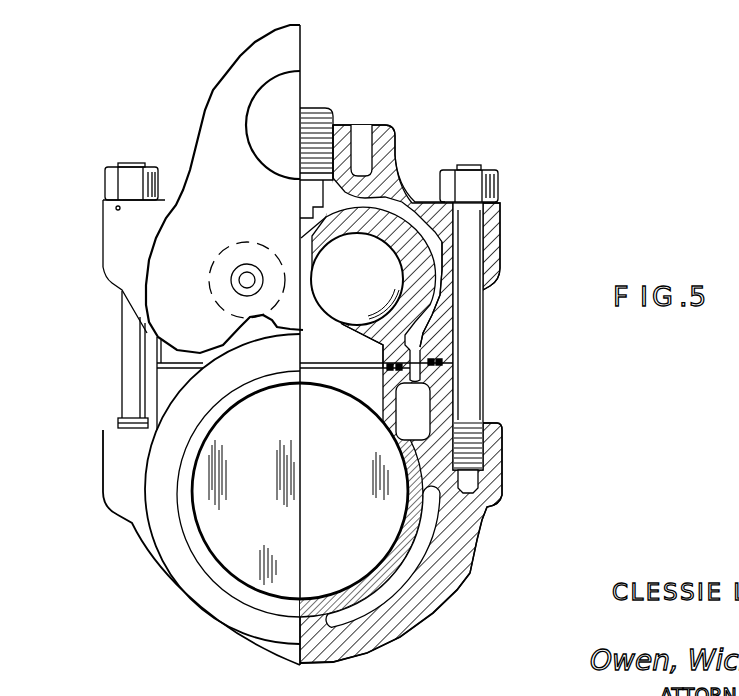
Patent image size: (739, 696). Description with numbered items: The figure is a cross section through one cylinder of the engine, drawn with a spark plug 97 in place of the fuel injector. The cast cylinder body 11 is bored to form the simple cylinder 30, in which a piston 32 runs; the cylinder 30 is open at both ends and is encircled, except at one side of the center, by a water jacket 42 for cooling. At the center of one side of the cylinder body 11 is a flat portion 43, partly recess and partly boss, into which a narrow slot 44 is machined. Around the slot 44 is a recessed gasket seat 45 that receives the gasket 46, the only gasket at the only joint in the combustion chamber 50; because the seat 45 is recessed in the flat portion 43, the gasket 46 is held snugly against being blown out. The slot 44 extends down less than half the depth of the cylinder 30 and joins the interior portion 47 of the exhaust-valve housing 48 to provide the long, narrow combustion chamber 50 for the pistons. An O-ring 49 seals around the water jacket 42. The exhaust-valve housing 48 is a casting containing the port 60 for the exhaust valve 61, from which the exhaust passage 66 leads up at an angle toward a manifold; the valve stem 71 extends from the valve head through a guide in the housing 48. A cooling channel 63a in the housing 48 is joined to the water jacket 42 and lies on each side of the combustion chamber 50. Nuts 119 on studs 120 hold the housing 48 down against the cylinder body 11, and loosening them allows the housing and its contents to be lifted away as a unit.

The cylinder body 11 is at (433, 613).
The cylinder 30 is at (380, 562).
The piston 32 is at (356, 507).
The water jacket 42 is at (422, 548).
The flat portion 43 is at (442, 362).
The slot 44 is at (396, 405).
The gasket seat 45 is at (387, 367).
The gasket 46 is at (400, 363).
The interior portion 47 is at (327, 348).
The exhaust-valve housing 48 is at (205, 95).
The O-ring 49 is at (443, 352).
The combustion chamber 50 is at (328, 378).
The port 60 is at (322, 313).
The exhaust valve 61 is at (352, 274).
The cooling channel 63a is at (405, 222).
The exhaust passage 66 is at (285, 109).
The valve stem 71 is at (233, 285).
The spark plug 97 is at (333, 120).
The nut 119 is at (112, 180).
The stud 120 is at (120, 354).